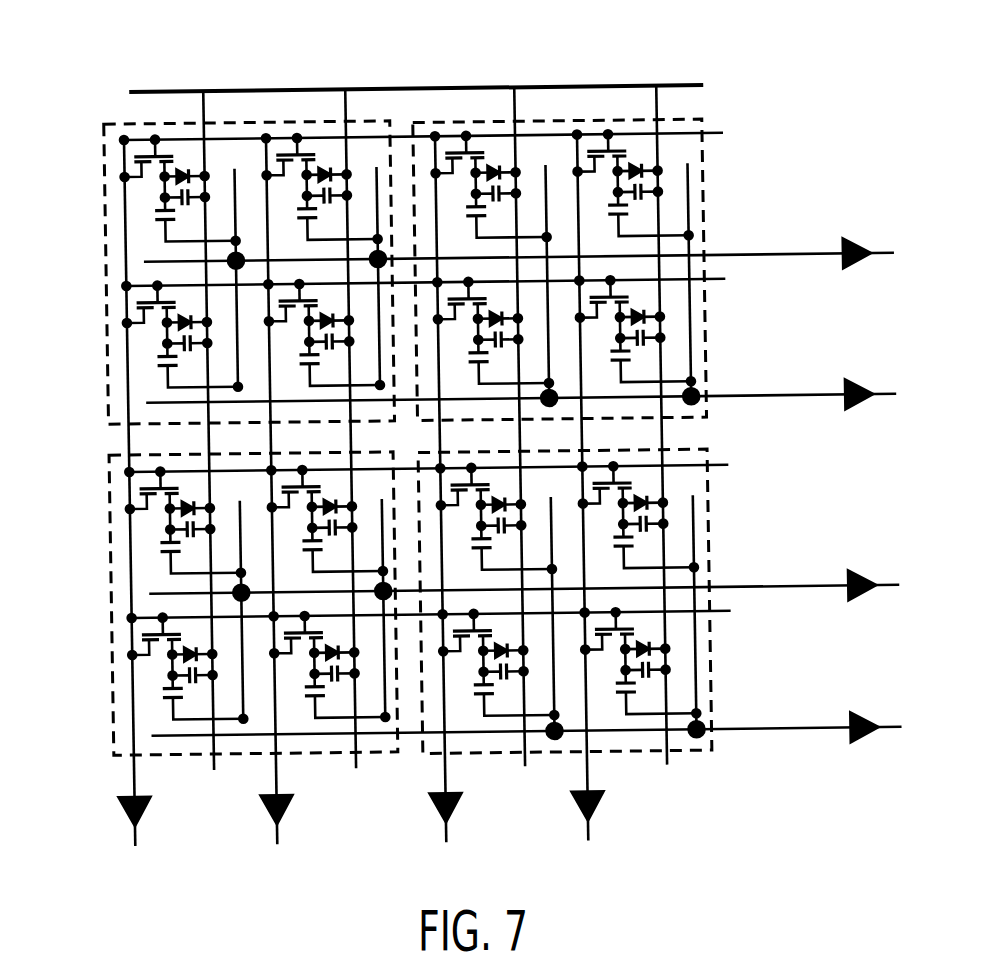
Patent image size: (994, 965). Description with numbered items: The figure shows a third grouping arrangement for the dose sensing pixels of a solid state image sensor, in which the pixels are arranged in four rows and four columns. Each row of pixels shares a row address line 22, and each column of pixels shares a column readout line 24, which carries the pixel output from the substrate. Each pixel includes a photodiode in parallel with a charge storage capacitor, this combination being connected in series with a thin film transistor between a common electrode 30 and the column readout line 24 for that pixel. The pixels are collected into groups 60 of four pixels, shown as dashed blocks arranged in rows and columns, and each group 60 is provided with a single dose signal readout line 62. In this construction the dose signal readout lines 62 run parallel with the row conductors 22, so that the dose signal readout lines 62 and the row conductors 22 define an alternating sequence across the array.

The common electrode 30 is at (594, 91).
The row address line 22 is at (723, 140).
The column readout line 24 is at (124, 782).
The group of pixels 60 is at (744, 543).
The dose signal readout line 62 is at (814, 262).